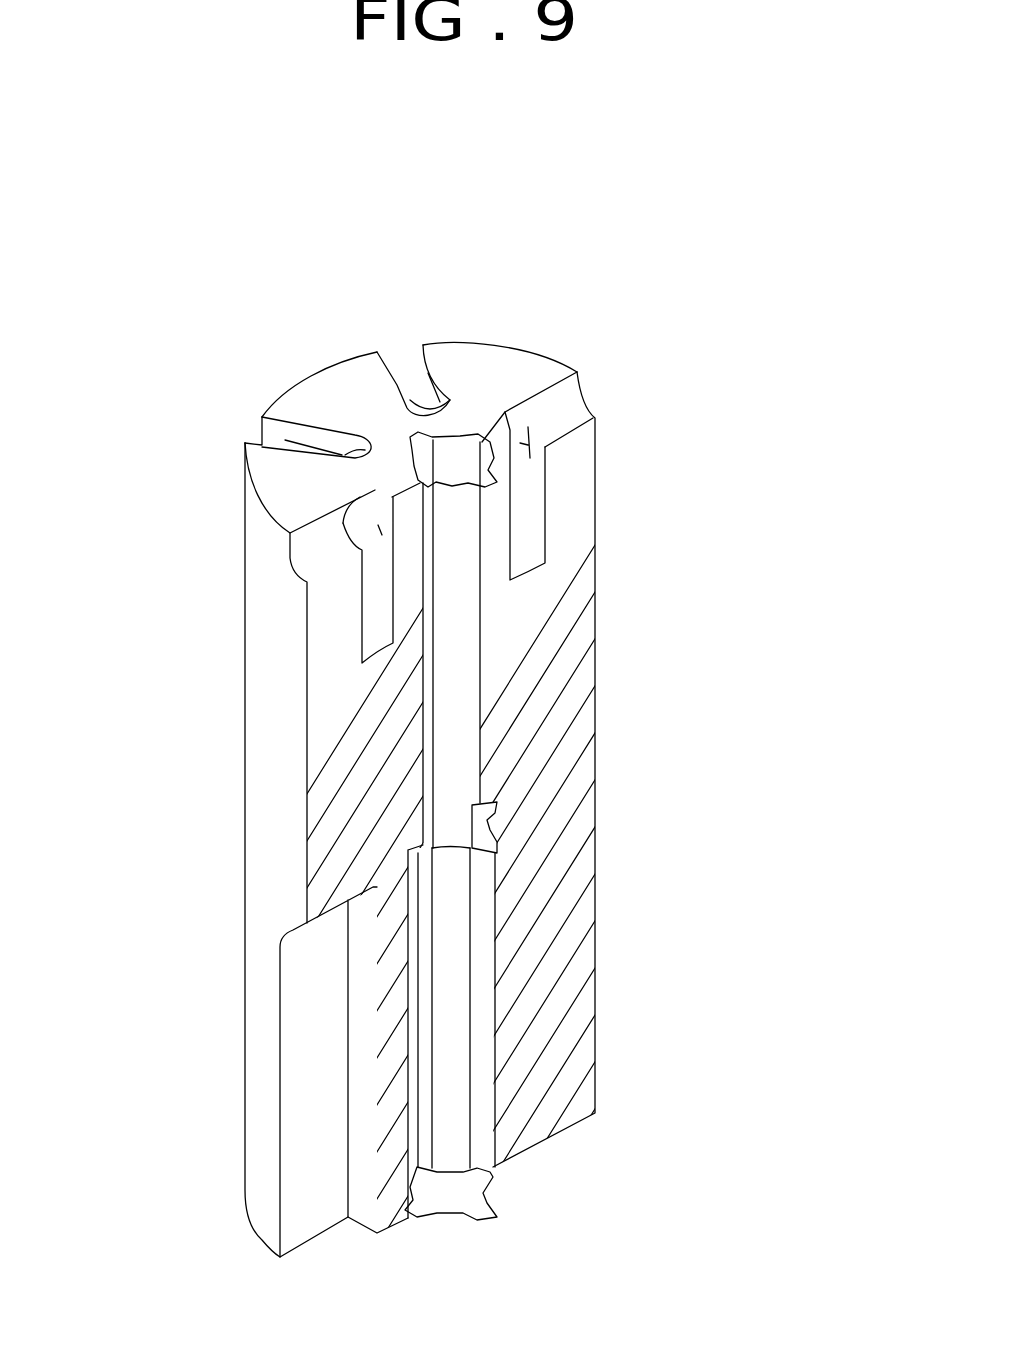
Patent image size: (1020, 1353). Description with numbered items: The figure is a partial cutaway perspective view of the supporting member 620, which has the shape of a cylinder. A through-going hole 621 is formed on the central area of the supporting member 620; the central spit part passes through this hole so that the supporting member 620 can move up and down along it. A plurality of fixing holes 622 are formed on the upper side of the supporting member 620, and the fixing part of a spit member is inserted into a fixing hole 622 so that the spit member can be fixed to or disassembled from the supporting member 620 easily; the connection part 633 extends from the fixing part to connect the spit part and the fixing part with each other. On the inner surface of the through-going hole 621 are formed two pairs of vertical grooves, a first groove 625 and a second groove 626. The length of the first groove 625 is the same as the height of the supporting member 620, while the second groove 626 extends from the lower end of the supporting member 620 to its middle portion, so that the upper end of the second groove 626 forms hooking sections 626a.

The supporting member 620 is at (687, 785).
The through-going hole 621 is at (457, 453).
The fixing holes 622 is at (545, 447).
The first groove 625 is at (410, 413).
The second groove 626 is at (478, 972).
The hooking sections 626a is at (428, 846).
The connection part 633 is at (293, 953).